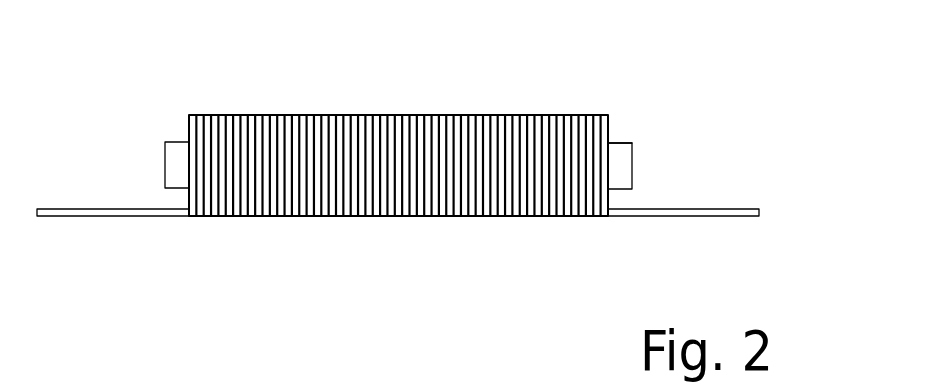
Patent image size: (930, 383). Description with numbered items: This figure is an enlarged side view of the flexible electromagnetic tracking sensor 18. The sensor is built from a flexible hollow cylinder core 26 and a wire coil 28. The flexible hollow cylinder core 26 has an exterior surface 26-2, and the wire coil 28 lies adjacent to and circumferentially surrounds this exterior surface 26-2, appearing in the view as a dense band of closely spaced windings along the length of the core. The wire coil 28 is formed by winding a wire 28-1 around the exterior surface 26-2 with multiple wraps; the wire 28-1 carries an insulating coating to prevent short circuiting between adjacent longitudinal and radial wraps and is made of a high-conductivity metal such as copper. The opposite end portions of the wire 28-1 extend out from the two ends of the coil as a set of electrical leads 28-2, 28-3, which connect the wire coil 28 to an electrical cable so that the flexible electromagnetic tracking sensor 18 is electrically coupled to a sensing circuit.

The flexible electromagnetic tracking sensor 18 is at (768, 83).
The flexible hollow cylinder core 26 is at (632, 143).
The exterior surface 26-2 is at (617, 140).
The wire coil 28 is at (188, 113).
The wire 28-1 is at (187, 127).
The electrical lead 28-2 is at (112, 218).
The electrical lead 28-3 is at (682, 217).